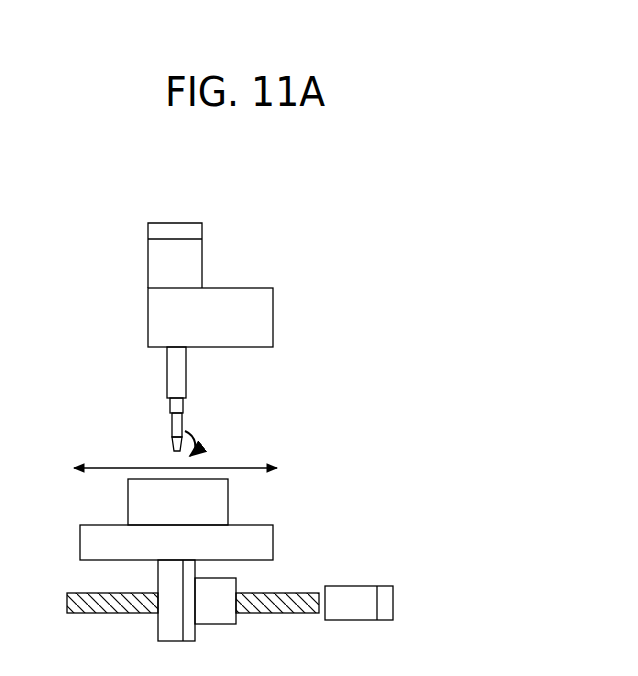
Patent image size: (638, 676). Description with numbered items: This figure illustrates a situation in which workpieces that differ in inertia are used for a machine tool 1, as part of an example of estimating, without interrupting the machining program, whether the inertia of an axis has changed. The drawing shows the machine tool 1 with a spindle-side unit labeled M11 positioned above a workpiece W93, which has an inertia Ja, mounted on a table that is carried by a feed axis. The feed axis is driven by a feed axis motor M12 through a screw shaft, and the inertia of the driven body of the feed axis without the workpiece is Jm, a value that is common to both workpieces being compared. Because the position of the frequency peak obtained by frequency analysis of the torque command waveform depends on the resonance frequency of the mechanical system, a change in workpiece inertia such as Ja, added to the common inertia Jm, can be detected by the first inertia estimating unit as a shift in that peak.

The machine tool 1 is at (119, 199).
The motor M11 is at (203, 259).
The workpiece W93 is at (128, 497).
The inertia Ja is at (178, 502).
The feed axis motor M12 is at (356, 586).
The inertia Jm is at (381, 622).